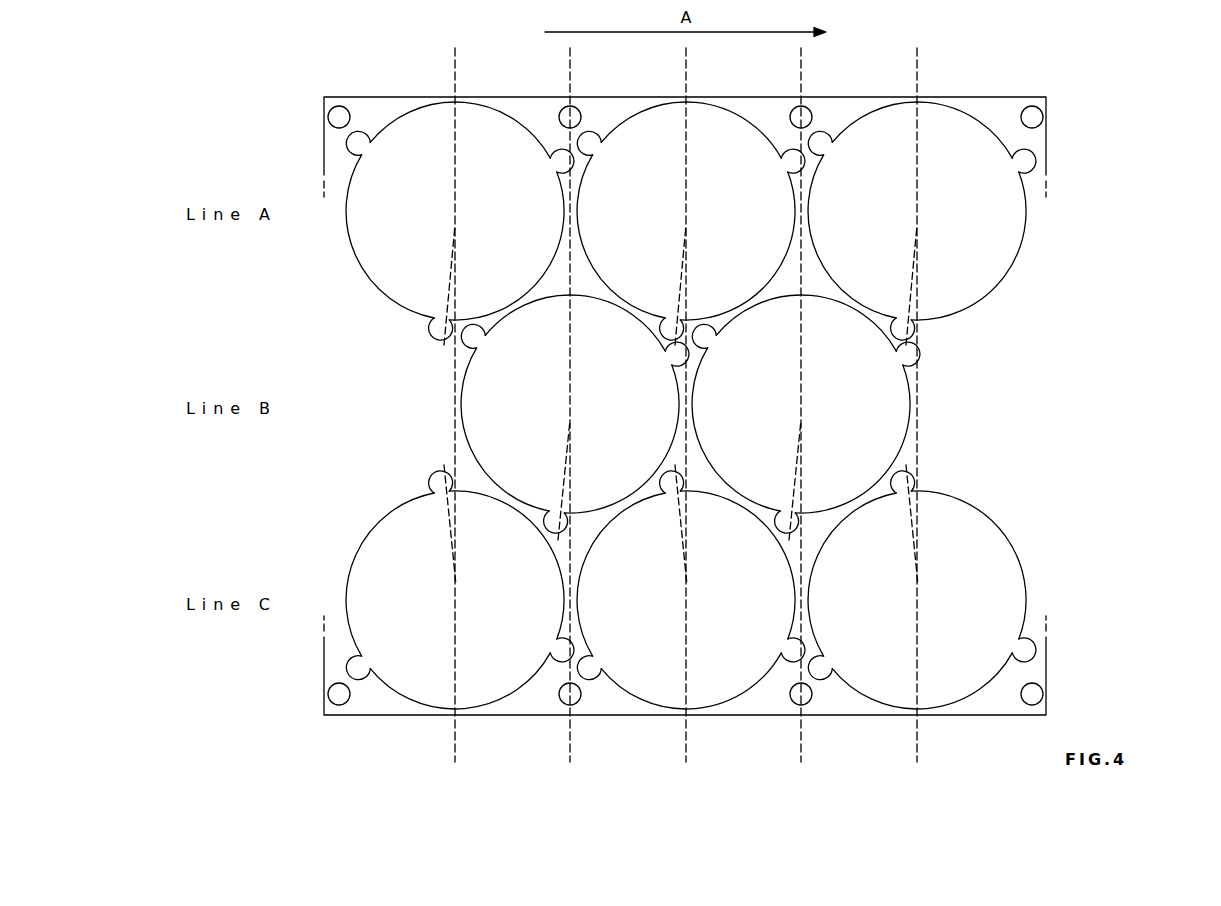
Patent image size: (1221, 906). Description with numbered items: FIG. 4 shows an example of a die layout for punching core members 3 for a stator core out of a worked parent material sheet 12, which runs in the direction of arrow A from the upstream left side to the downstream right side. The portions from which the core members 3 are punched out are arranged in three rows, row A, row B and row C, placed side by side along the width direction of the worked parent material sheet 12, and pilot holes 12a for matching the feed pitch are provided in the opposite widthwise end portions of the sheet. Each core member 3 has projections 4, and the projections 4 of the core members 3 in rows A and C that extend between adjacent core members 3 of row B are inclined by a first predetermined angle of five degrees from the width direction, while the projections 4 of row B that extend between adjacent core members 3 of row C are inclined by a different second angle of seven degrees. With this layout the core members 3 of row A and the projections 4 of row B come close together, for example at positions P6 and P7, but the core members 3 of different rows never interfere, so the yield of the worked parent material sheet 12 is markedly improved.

The core member for the stator core 3 is at (504, 133).
The projection 4 is at (432, 318).
The worked parent material sheet 12 is at (368, 112).
The pilot hole 12a is at (340, 120).
The position P6 is at (471, 309).
The position P7 is at (699, 313).